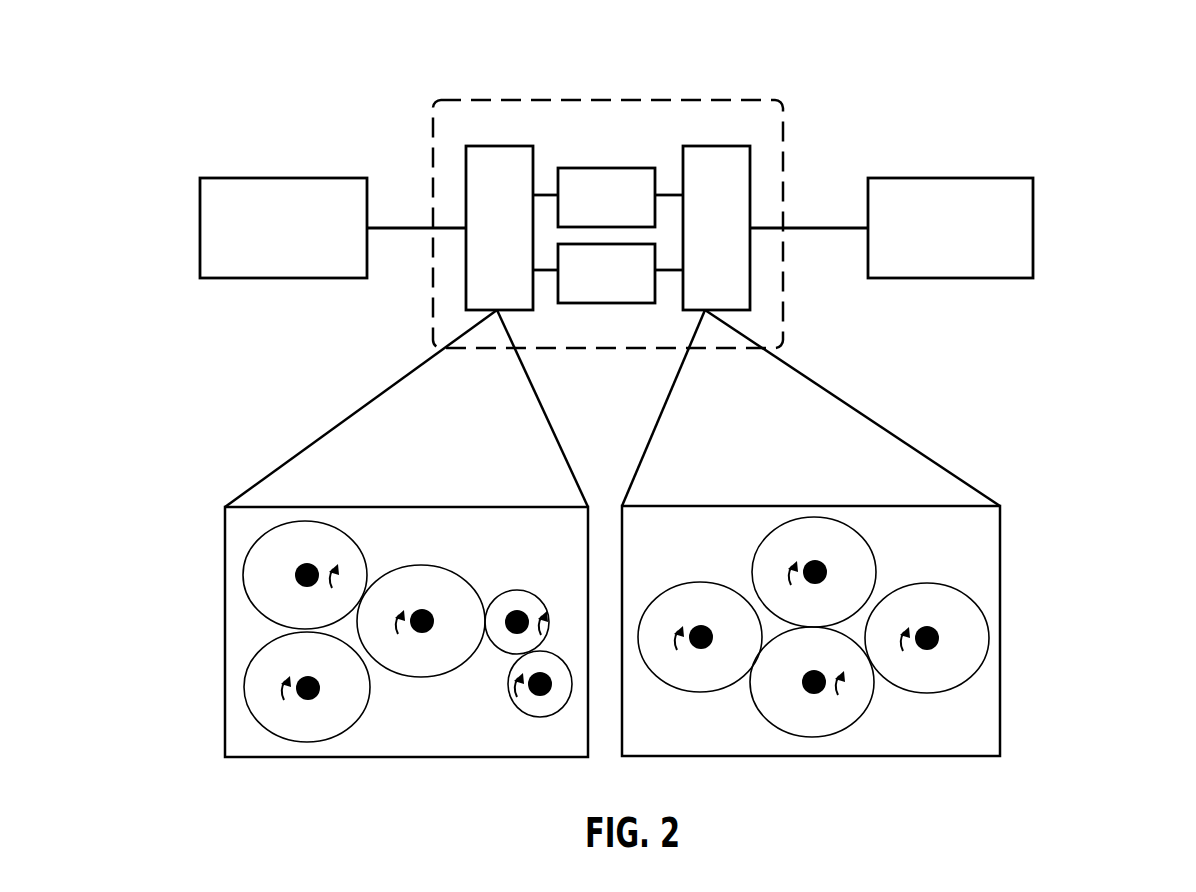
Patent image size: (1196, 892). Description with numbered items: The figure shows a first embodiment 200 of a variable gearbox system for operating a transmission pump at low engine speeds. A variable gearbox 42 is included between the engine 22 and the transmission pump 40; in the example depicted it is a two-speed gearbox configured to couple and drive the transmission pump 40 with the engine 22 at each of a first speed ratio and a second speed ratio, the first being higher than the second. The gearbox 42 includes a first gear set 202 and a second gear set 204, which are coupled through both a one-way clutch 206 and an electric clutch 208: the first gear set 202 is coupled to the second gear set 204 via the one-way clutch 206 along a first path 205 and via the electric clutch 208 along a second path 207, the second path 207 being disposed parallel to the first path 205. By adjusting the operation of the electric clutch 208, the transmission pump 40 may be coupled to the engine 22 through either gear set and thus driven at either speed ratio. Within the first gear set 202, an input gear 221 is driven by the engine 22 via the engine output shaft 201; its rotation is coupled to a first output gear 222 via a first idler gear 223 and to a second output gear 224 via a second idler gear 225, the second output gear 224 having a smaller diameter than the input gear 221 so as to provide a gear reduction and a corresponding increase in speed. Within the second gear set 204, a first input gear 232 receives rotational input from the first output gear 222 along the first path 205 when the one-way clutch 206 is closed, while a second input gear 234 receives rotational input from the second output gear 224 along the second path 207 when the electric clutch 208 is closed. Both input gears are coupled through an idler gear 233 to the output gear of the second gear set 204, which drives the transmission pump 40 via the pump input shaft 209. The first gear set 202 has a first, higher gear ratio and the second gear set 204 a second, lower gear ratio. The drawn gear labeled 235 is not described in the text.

The first embodiment of variable gearbox system 200 is at (1112, 98).
The engine 22 is at (283, 228).
The transmission pump 40 is at (950, 228).
The variable gearbox 42 is at (616, 100).
The engine output shaft 201 is at (374, 228).
The first gear set 202 is at (499, 228).
The second gear set 204 is at (716, 228).
The first path 205 is at (540, 193).
The one-way clutch 206 is at (620, 197).
The second path 207 is at (540, 272).
The electric clutch 208 is at (620, 273).
The pump input shaft 209 is at (799, 228).
The input gear 221 is at (416, 565).
The first output gear 222 is at (360, 708).
The first idler gear 223 is at (300, 521).
The second output gear 224 is at (511, 700).
The second idler gear 225 is at (537, 597).
The first input gear 232 is at (670, 589).
The idler gear 233 is at (861, 716).
The second input gear 234 is at (928, 583).
The pump gear 235 is at (821, 517).